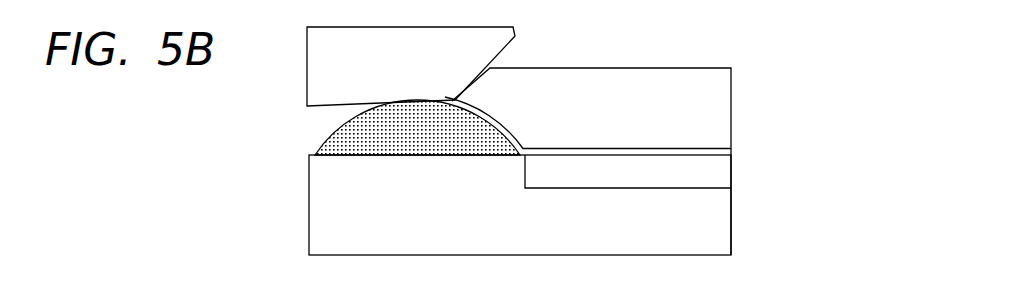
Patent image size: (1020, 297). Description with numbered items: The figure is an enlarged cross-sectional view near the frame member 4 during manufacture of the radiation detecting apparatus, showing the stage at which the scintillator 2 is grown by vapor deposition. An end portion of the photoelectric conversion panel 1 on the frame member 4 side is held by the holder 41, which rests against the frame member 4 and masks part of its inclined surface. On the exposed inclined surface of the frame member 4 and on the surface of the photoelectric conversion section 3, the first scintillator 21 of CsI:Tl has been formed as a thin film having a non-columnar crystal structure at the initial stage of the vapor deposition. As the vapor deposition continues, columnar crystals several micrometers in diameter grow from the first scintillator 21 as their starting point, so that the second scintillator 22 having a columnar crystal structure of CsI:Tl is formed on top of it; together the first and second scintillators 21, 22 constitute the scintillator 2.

The photoelectric conversion panel 1 is at (320, 210).
The scintillator 2 is at (639, 161).
The first scintillator 21 is at (717, 150).
The second scintillator 22 is at (722, 98).
The photoelectric conversion section 3 is at (722, 172).
The frame member 4 is at (340, 136).
The holder 41 is at (316, 63).